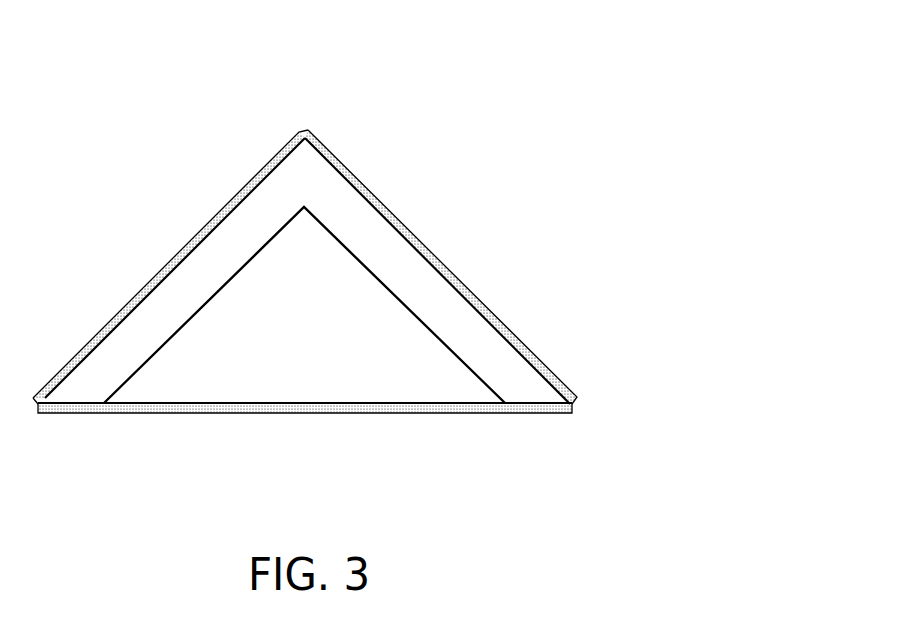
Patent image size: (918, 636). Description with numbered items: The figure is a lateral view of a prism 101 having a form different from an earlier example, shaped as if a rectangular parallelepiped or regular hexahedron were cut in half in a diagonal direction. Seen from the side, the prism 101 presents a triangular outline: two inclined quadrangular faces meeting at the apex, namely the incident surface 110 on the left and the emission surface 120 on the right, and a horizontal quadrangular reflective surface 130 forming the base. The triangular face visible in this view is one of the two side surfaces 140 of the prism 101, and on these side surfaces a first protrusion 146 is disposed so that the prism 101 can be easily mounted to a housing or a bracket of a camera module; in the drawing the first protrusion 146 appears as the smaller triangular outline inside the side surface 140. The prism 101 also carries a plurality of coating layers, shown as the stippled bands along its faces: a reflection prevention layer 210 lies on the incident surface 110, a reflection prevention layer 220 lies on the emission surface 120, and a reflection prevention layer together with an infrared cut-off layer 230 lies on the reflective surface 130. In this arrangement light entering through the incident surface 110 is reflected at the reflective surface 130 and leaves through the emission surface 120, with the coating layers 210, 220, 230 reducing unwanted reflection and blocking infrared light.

The prism 101 is at (472, 140).
The incident surface 110 is at (168, 270).
The emission surface 120 is at (440, 268).
The reflective surface 130 is at (287, 405).
The side surface 140 is at (83, 387).
The first protrusion 146 is at (210, 375).
The reflection prevention layer 210 is at (120, 308).
The reflection prevention layer 220 is at (490, 308).
The infrared cut-off layer 230 is at (392, 413).